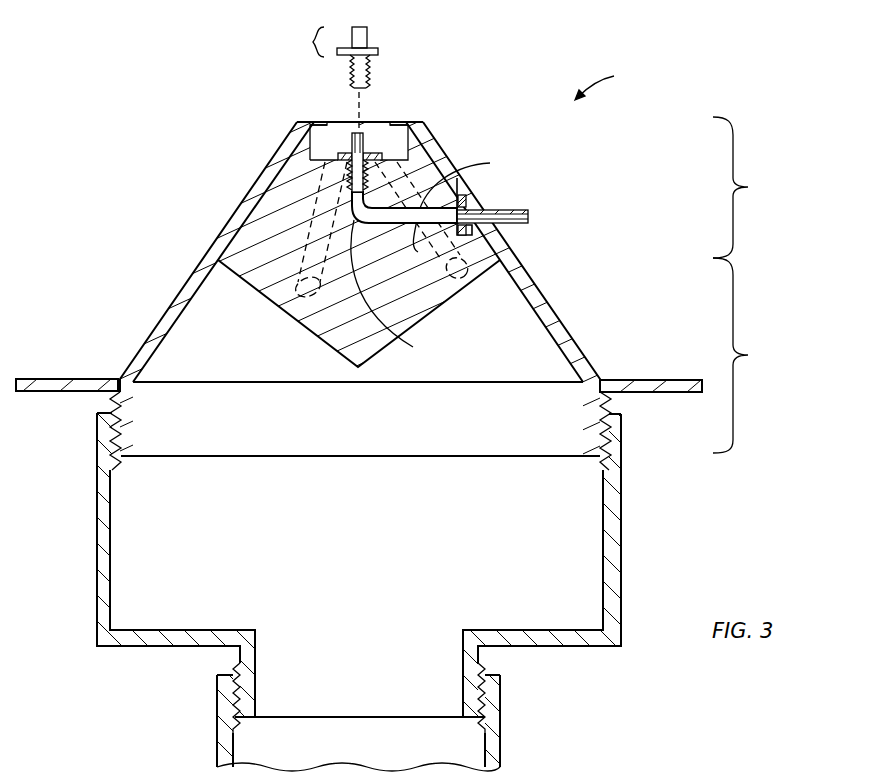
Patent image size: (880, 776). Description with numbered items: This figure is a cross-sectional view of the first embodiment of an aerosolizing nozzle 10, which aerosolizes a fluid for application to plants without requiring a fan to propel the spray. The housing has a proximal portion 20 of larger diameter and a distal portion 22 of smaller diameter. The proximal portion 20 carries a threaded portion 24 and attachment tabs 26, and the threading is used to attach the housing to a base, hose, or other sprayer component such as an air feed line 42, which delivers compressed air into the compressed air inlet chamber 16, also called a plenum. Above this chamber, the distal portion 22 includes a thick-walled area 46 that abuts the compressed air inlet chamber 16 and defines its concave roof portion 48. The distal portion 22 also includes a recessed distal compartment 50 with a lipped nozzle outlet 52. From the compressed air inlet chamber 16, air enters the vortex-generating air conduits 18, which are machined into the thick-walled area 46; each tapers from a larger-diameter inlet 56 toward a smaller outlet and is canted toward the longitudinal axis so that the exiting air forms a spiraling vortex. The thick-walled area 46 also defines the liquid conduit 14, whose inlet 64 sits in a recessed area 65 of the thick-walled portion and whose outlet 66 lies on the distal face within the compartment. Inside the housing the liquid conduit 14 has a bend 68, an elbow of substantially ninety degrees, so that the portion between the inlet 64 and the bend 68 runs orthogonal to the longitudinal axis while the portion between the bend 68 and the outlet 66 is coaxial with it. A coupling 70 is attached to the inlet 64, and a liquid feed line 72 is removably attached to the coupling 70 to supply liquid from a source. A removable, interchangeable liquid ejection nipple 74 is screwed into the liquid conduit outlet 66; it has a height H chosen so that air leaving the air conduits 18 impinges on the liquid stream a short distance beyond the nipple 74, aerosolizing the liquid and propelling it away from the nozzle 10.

The aerosolizing nozzle 10 is at (610, 80).
The liquid conduit 14 is at (465, 199).
The compressed air inlet chamber 16 is at (527, 345).
The vortex-generating air conduits 18 is at (398, 185).
The proximal portion 20 is at (748, 355).
The distal portion 22 is at (748, 187).
The threaded portion 24 is at (603, 432).
The attachment tabs 26 is at (648, 377).
The air feed line 42 is at (500, 700).
The thick-walled area 46 is at (280, 200).
The concave roof portion 48 is at (322, 343).
The distal compartment 50 is at (320, 138).
The lipped nozzle outlet 52 is at (345, 121).
The air conduit inlet 56 is at (483, 320).
The liquid conduit inlet 64 is at (416, 243).
The recessed area 65 is at (493, 228).
The liquid conduit outlet 66 is at (366, 156).
The bend 68 is at (413, 347).
The coupling 70 is at (478, 198).
The liquid feed line 72 is at (530, 211).
The liquid ejection nipple 74 is at (370, 42).
The height H is at (313, 42).